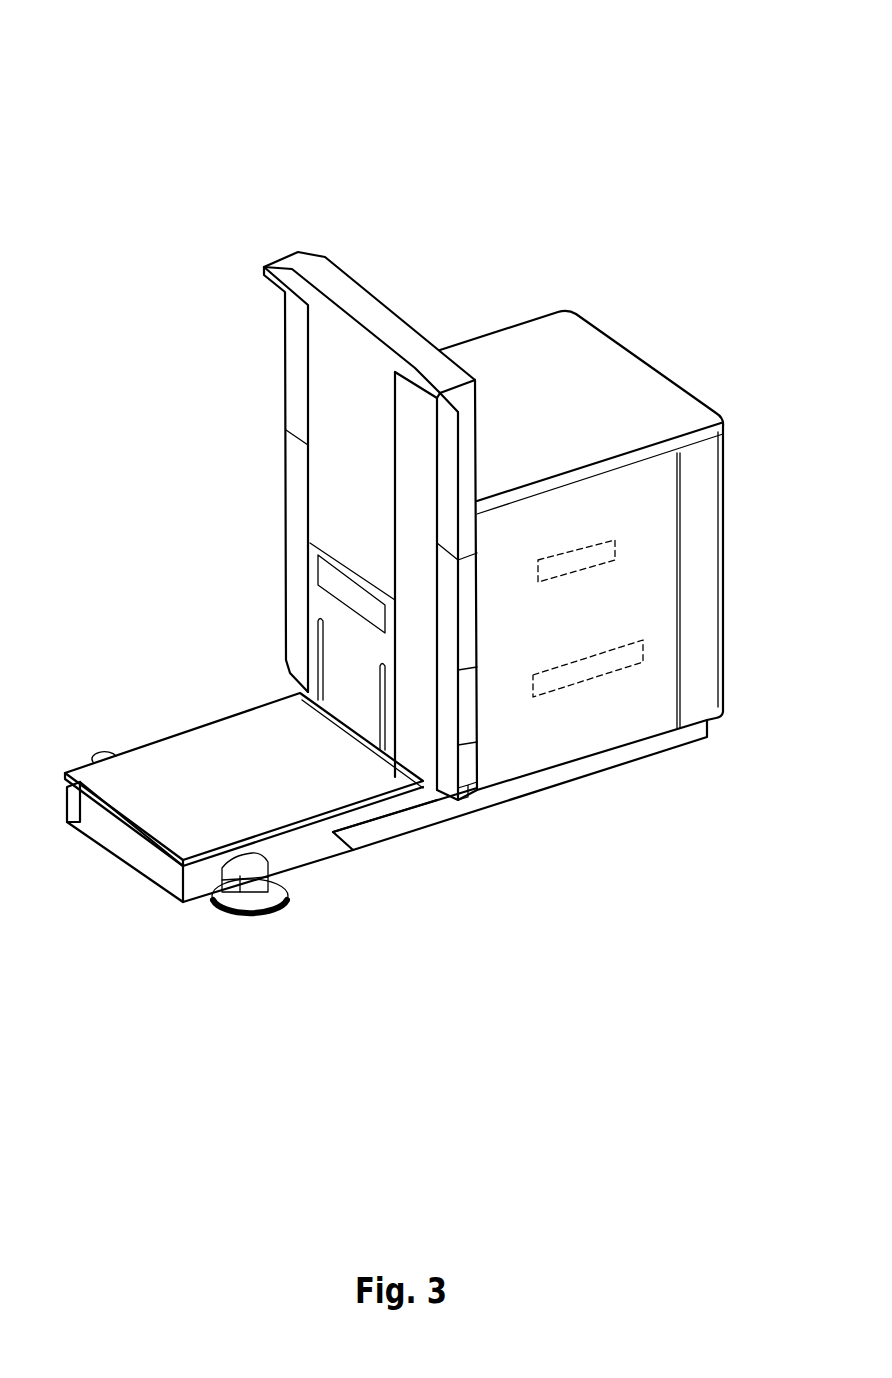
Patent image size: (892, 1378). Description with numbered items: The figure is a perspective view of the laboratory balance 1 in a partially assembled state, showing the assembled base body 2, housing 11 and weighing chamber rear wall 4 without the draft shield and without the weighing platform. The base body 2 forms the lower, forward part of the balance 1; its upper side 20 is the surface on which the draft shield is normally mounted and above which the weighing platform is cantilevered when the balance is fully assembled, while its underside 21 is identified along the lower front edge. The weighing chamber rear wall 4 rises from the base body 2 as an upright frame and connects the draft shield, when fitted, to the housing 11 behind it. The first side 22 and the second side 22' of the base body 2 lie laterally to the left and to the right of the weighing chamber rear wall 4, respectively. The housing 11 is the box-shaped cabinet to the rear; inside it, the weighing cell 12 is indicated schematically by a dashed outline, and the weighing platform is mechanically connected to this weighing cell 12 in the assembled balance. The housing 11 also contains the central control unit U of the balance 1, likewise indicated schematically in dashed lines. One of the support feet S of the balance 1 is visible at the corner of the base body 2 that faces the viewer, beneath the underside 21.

The laboratory balance 1 is at (581, 108).
The base body 2 is at (500, 792).
The weighing chamber rear wall 4 is at (375, 313).
The housing 11 is at (637, 395).
The weighing cell 12 is at (643, 650).
The central control unit U is at (615, 548).
The upper side 20 is at (303, 795).
The underside 21 is at (303, 864).
The first side 22 is at (298, 685).
The second side 22' is at (408, 785).
The support foot S is at (235, 922).